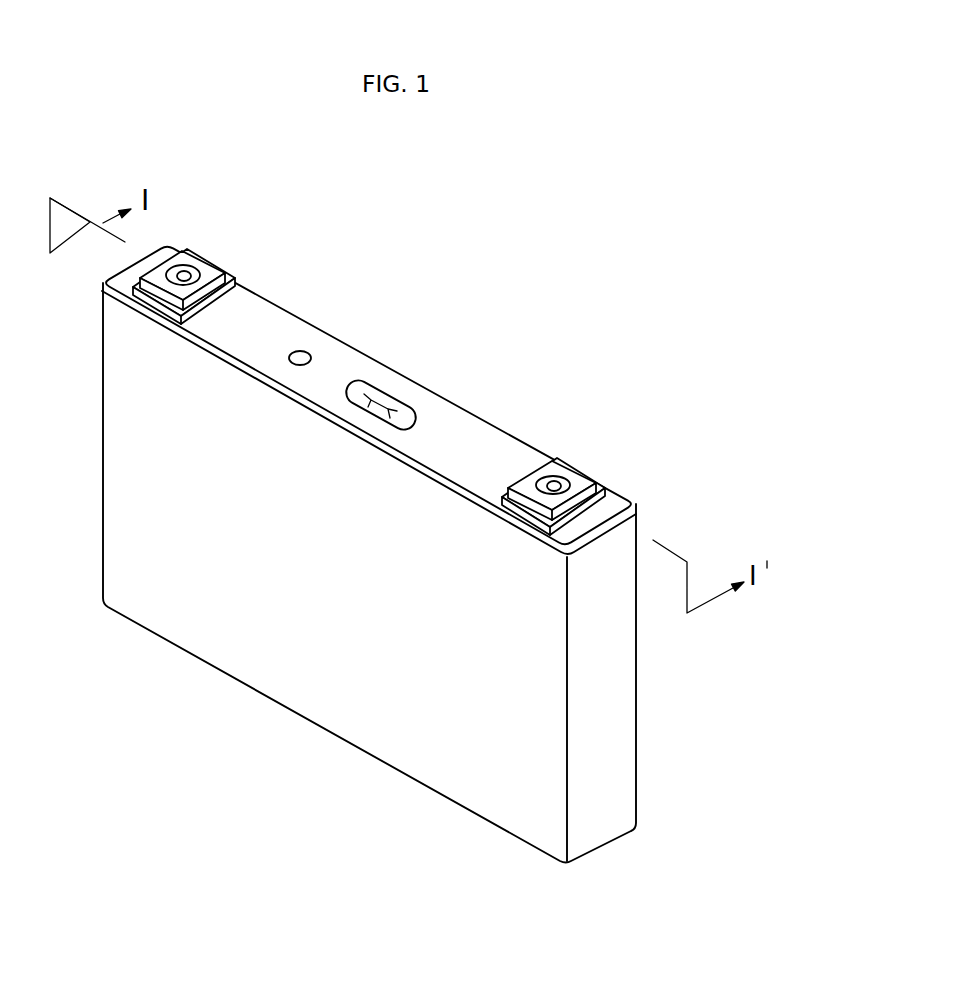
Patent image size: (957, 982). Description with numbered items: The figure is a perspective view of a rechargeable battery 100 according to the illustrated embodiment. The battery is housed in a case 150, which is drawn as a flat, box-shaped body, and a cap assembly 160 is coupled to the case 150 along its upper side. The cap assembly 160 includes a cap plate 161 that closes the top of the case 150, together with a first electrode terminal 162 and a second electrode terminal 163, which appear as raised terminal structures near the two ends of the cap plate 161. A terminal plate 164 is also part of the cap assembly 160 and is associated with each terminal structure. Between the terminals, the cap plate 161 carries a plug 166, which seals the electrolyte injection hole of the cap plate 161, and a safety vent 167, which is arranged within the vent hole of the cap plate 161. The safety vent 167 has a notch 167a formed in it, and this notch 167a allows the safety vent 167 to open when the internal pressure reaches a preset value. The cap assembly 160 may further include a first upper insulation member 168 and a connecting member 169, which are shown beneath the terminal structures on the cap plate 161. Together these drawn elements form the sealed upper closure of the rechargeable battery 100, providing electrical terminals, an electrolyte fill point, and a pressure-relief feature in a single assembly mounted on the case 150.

The rechargeable battery 100 is at (418, 226).
The case 150 is at (316, 704).
The cap assembly 160 is at (500, 422).
The cap plate 161 is at (348, 360).
The first electrode terminal 162 is at (566, 479).
The second electrode terminal 163 is at (199, 271).
The terminal plate 164 is at (190, 259).
The plug 166 is at (305, 351).
The safety vent 167 is at (383, 393).
The notch 167a is at (396, 408).
The first upper insulation member 168 is at (620, 497).
The connecting member 169 is at (237, 294).